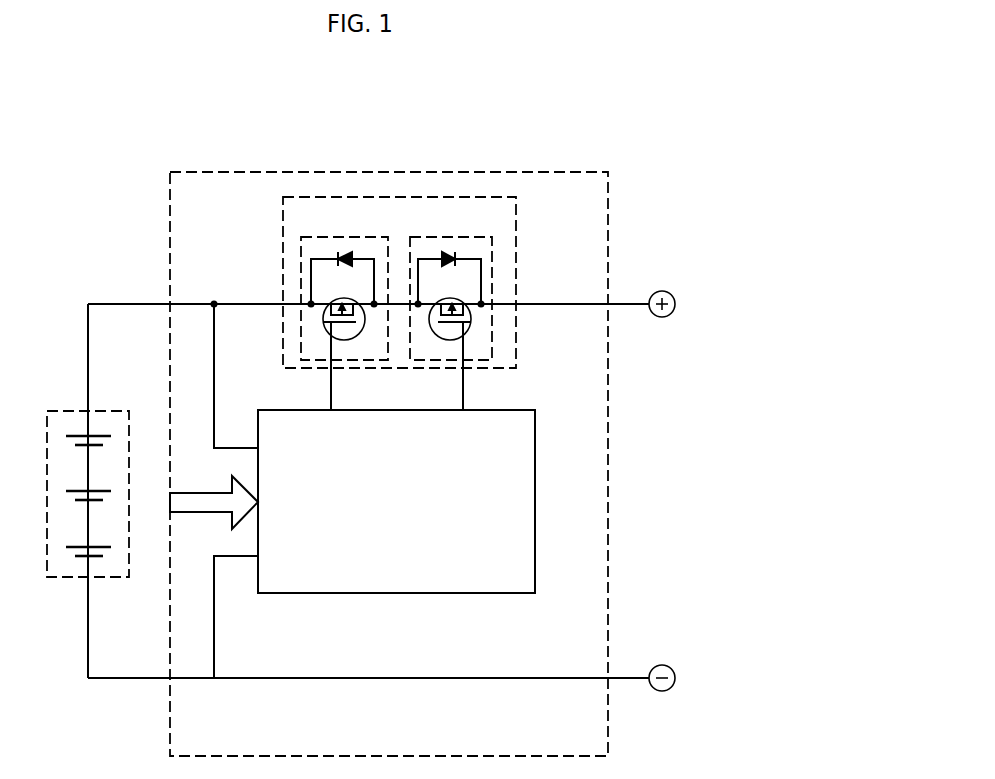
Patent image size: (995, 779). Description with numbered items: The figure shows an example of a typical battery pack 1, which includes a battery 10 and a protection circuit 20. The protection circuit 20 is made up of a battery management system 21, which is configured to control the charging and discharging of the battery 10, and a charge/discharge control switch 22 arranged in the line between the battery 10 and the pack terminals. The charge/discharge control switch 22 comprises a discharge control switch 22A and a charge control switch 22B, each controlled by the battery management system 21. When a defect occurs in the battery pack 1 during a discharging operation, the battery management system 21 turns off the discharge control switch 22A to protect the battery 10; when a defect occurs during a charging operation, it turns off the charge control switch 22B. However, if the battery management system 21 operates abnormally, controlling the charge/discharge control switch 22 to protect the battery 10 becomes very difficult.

The battery pack 1 is at (643, 55).
The battery 10 is at (70, 411).
The protection circuit 20 is at (558, 171).
The battery management system 21 is at (535, 457).
The charge/discharge control switch 22 is at (472, 197).
The discharge control switch 22A is at (323, 237).
The charge control switch 22B is at (427, 237).